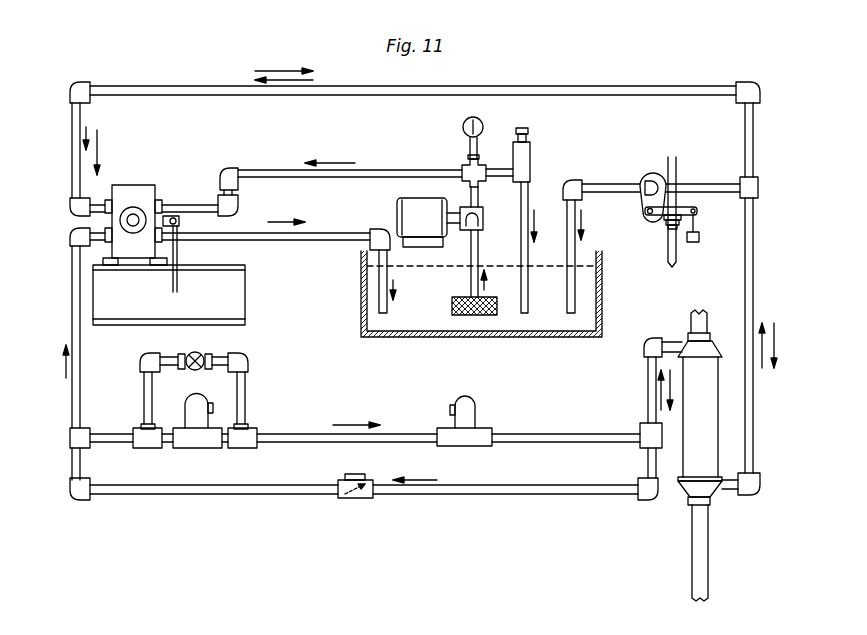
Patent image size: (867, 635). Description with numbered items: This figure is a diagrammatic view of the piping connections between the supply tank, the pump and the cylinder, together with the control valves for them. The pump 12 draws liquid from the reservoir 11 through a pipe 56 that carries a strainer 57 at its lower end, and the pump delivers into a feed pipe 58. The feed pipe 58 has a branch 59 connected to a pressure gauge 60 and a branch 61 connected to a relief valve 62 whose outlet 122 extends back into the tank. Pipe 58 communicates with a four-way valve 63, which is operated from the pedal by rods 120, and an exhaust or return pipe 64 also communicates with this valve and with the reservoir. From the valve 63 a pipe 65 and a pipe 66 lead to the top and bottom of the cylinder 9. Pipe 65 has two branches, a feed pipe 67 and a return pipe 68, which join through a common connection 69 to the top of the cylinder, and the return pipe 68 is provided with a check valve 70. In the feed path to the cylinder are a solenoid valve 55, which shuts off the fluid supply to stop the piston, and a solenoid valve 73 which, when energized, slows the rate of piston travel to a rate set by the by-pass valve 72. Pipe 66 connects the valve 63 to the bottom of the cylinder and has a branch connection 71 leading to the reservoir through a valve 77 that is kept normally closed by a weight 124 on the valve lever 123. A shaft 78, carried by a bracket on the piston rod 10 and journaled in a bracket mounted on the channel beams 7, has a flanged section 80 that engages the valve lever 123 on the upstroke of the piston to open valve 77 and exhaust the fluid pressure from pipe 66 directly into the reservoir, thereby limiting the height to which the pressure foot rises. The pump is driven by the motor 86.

The channel beams 7 is at (233, 297).
The cylinder 9 is at (710, 413).
The piston rod 10 is at (710, 530).
The reservoir 11 is at (418, 336).
The pump 12 is at (484, 215).
The solenoid valve 55 is at (452, 404).
The pipe 56 is at (480, 237).
The strainer 57 is at (468, 318).
The feed pipe 58 is at (277, 170).
The branch 59 is at (470, 150).
The pressure gauge 60 is at (463, 127).
The branch 61 is at (496, 170).
The relief valve 62 is at (530, 158).
The four-way valve 63 is at (140, 192).
The exhaust or return pipe 64 is at (270, 240).
The pipe 65 is at (72, 295).
The pipe 66 is at (72, 129).
The feed pipe 67 is at (293, 433).
The return pipe 68 is at (252, 496).
The common connection 69 is at (647, 378).
The check valve 70 is at (358, 499).
The branch connection 71 is at (715, 183).
The by-pass valve 72 is at (200, 357).
The solenoid valve 73 is at (190, 405).
The valve 77 is at (641, 207).
The shaft 78 is at (677, 165).
The flanged section 80 is at (665, 222).
The motor 86 is at (397, 207).
The rods 120 is at (173, 285).
The outlet 122 is at (530, 222).
The valve lever 123 is at (697, 210).
The weight 124 is at (700, 238).